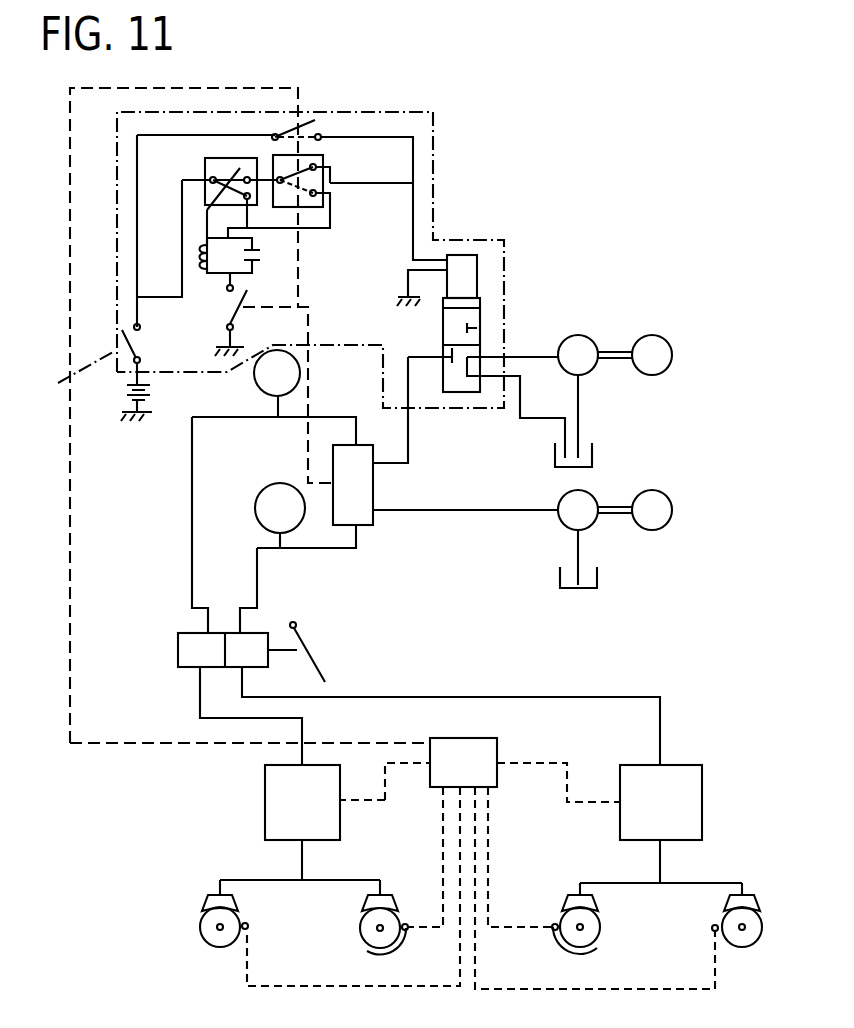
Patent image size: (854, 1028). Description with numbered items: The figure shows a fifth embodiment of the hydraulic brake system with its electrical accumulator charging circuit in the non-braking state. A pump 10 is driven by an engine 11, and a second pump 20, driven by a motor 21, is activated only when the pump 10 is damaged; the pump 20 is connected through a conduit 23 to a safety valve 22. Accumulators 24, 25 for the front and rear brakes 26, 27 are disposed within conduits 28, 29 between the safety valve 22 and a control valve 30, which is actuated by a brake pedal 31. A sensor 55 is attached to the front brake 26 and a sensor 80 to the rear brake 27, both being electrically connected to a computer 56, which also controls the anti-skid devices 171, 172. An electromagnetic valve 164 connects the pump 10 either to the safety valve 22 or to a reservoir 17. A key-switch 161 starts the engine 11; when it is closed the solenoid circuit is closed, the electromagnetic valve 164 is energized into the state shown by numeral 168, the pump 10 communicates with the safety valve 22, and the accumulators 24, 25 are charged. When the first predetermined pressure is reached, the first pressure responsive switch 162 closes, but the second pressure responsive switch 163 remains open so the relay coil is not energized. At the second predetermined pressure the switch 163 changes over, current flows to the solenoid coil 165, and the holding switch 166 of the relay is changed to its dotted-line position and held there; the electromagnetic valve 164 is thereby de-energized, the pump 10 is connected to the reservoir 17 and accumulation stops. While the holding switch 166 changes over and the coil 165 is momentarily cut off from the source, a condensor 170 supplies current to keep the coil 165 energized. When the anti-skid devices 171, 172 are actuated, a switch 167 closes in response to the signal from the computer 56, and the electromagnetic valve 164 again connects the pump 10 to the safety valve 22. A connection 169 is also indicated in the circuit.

The pump 10 is at (580, 343).
The engine 11 is at (652, 343).
The reservoir 17 is at (597, 578).
The pump 20 is at (586, 502).
The motor 21 is at (653, 500).
The safety valve 22 is at (361, 507).
The conduit 23 is at (463, 512).
The accumulator 24 is at (298, 375).
The accumulator 25 is at (277, 493).
The front brake 26 is at (362, 912).
The rear brake 27 is at (725, 912).
The conduit 28 is at (192, 463).
The conduit 29 is at (257, 575).
The control valve 30 is at (171, 660).
The brake pedal 31 is at (316, 643).
The sensor 55 is at (367, 951).
The computer 56 is at (482, 783).
The sensor 80 is at (715, 931).
The key-switch 161 is at (124, 362).
The first pressure responsive switch 162 is at (239, 312).
The second pressure responsive switch 163 is at (345, 176).
The electromagnetic valve 164 is at (490, 275).
The solenoid coil 165 is at (199, 263).
The holding switch 166 is at (220, 165).
The switch 167 is at (323, 93).
The energized state of electromagnetic valve 168 is at (470, 323).
The circuit connection 169 is at (61, 381).
The condensor 170 is at (258, 248).
The anti-skid device 171 is at (266, 805).
The anti-skid device 172 is at (693, 807).